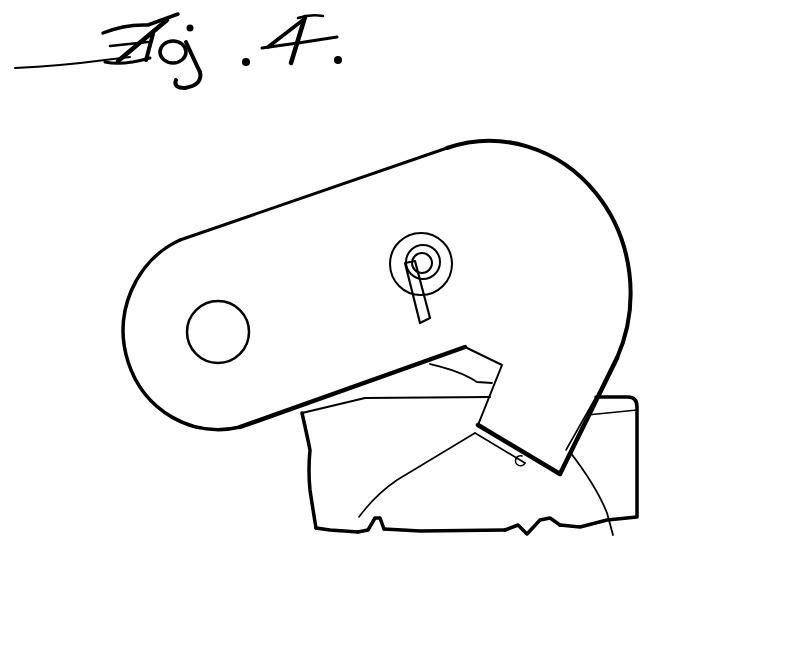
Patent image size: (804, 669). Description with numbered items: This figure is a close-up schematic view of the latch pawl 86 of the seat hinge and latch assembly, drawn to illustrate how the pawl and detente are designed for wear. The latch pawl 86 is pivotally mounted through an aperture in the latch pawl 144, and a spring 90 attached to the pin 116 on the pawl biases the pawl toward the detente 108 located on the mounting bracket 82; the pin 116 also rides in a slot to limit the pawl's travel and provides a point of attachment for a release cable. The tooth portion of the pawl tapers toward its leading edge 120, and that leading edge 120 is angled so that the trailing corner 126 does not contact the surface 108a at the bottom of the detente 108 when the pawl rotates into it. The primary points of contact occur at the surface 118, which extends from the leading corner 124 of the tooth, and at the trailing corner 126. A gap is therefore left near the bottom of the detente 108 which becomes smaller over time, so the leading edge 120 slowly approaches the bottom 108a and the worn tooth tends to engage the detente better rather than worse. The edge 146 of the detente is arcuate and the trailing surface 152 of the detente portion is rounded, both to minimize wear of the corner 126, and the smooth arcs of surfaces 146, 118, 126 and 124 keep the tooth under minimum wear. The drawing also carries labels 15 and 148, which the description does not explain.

The latch pawl 86 is at (620, 218).
The aperture in the latch pawl 144 is at (200, 327).
The pin 116 is at (419, 258).
The spring 90 is at (426, 314).
The trailing surface of the detente portion 152 is at (420, 363).
The pawl 15 is at (541, 410).
The edge of the detente means 146 is at (478, 429).
The leading edge 120 is at (484, 440).
The base block 148 is at (389, 400).
The trailing corner 126 is at (350, 546).
The detente 108 is at (536, 461).
The surface of the mounting bracket 108a is at (520, 470).
The mounting bracket 82 is at (638, 488).
The surface 118 is at (637, 410).
The leading corner 124 is at (610, 515).